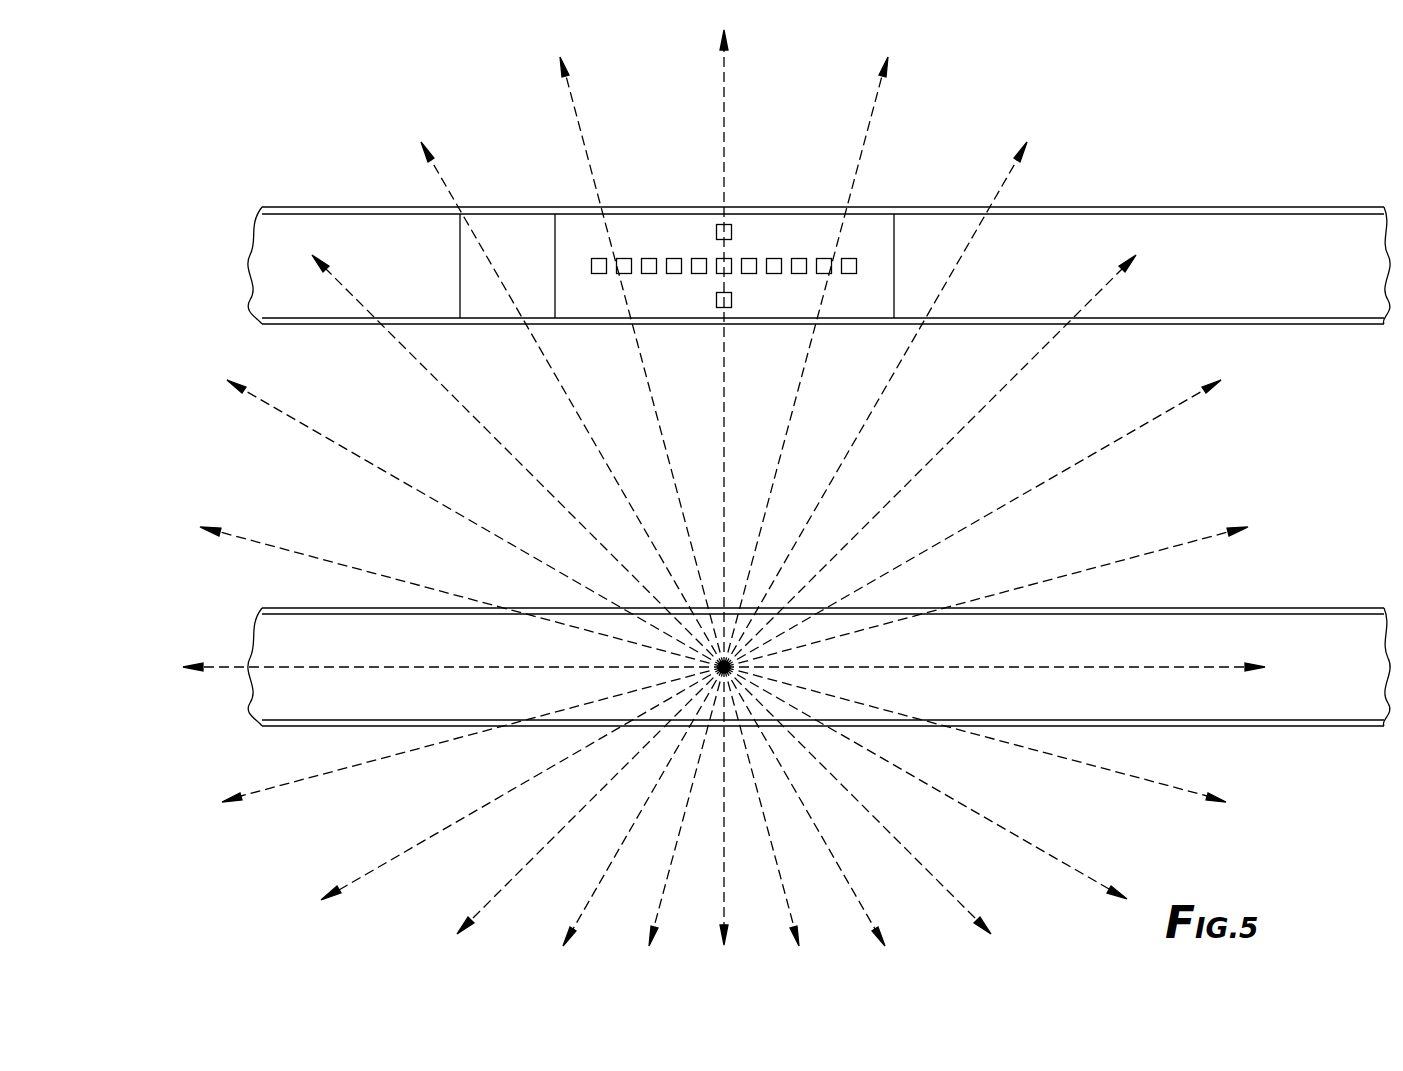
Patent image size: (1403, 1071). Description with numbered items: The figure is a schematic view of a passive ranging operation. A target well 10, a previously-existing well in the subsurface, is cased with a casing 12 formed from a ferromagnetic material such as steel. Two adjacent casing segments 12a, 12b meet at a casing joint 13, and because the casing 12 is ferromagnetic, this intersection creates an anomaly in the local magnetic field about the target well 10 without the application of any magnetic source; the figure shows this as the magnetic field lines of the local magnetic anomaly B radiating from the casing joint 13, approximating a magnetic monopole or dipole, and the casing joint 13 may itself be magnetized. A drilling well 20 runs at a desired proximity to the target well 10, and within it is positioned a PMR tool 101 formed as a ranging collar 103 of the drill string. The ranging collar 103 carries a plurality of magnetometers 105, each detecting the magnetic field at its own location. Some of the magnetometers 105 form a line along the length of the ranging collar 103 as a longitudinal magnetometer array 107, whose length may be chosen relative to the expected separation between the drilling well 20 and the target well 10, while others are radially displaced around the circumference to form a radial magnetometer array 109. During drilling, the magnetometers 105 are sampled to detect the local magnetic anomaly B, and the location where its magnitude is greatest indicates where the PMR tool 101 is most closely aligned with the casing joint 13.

The target well 10 is at (277, 727).
The casing 12 is at (365, 738).
The casing segment 12a is at (598, 725).
The casing segment 12b is at (892, 727).
The casing joint 13 is at (1014, 165).
The drilling well 20 is at (290, 207).
The PMR tool 101 is at (967, 84).
The ranging collar 103 is at (575, 210).
The magnetometers 105 is at (623, 258).
The longitudinal magnetometer array 107 is at (880, 266).
The radial magnetometer array 109 is at (728, 195).
The local magnetic anomaly B is at (877, 83).